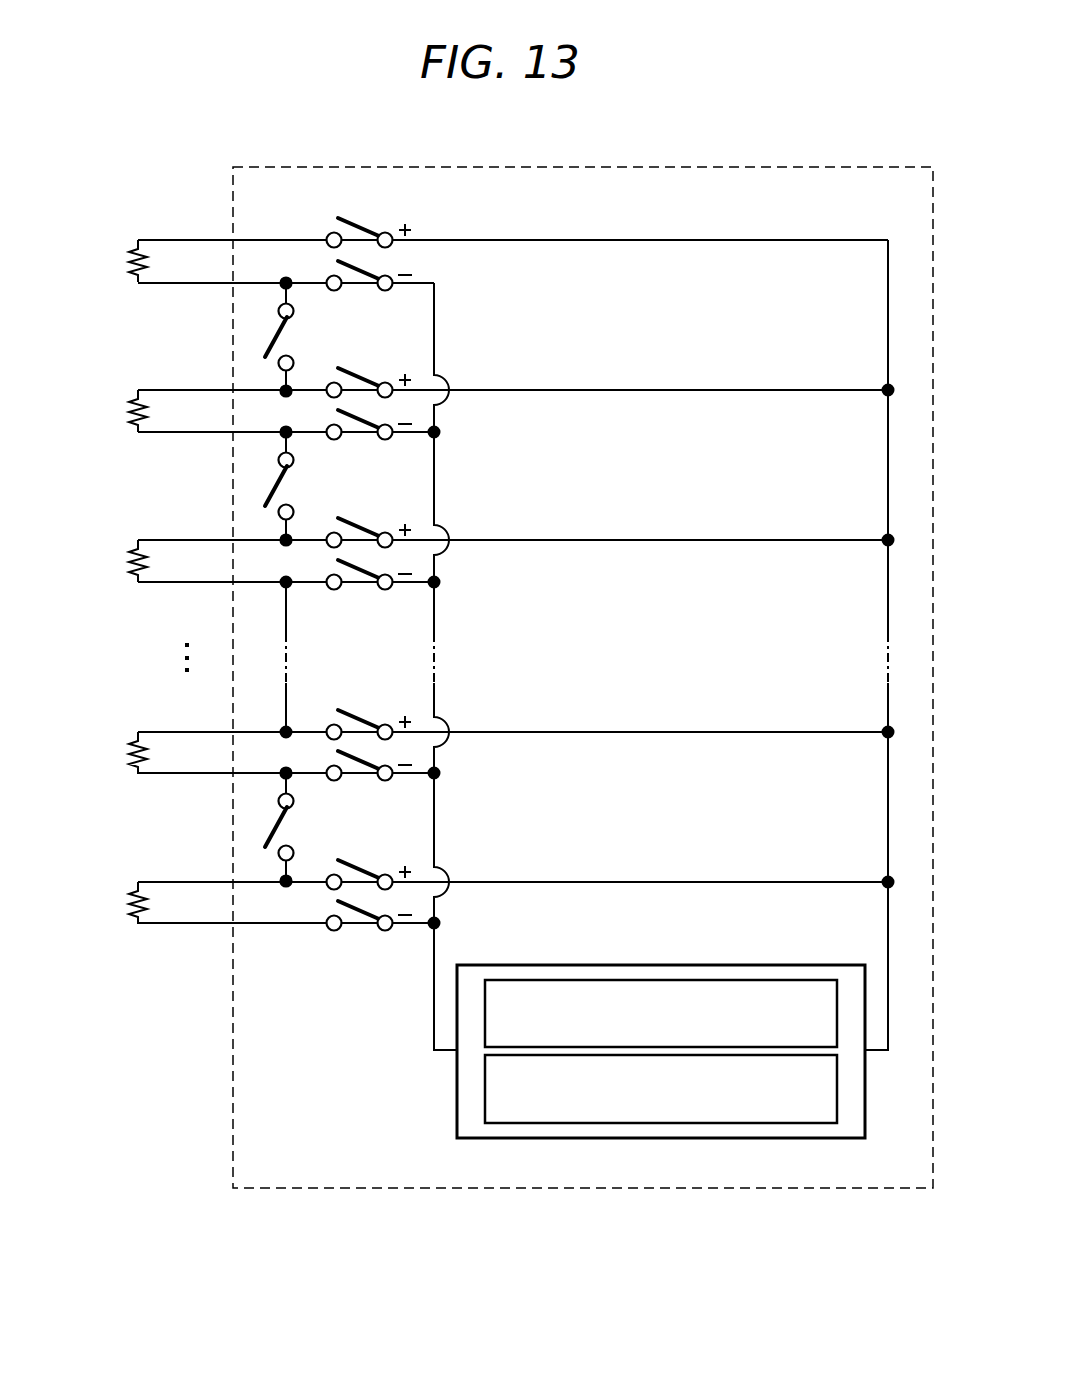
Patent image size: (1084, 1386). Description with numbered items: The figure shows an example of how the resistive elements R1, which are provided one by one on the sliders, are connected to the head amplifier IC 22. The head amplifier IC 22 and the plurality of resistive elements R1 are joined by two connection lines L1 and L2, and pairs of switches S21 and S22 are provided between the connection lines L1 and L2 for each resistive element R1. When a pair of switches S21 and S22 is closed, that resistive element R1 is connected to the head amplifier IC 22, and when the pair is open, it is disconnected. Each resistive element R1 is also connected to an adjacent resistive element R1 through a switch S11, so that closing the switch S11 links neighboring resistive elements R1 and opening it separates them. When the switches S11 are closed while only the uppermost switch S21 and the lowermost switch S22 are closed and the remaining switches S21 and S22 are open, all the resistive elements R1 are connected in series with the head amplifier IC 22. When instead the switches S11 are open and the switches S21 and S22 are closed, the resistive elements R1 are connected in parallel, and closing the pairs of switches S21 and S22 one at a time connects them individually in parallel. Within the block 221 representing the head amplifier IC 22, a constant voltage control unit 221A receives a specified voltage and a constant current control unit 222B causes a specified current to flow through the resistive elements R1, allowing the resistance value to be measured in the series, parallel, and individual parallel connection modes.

The head amplifier IC 22 is at (822, 165).
The resistive element R1 is at (128, 254).
The switch S11 is at (267, 332).
The switch S21 is at (363, 223).
The switch S22 is at (357, 278).
The connection line L1 is at (432, 1023).
The connection line L2 is at (889, 1010).
The control unit 221 is at (825, 965).
The constant voltage control unit 221A is at (668, 980).
The constant current control unit 222B is at (668, 1128).